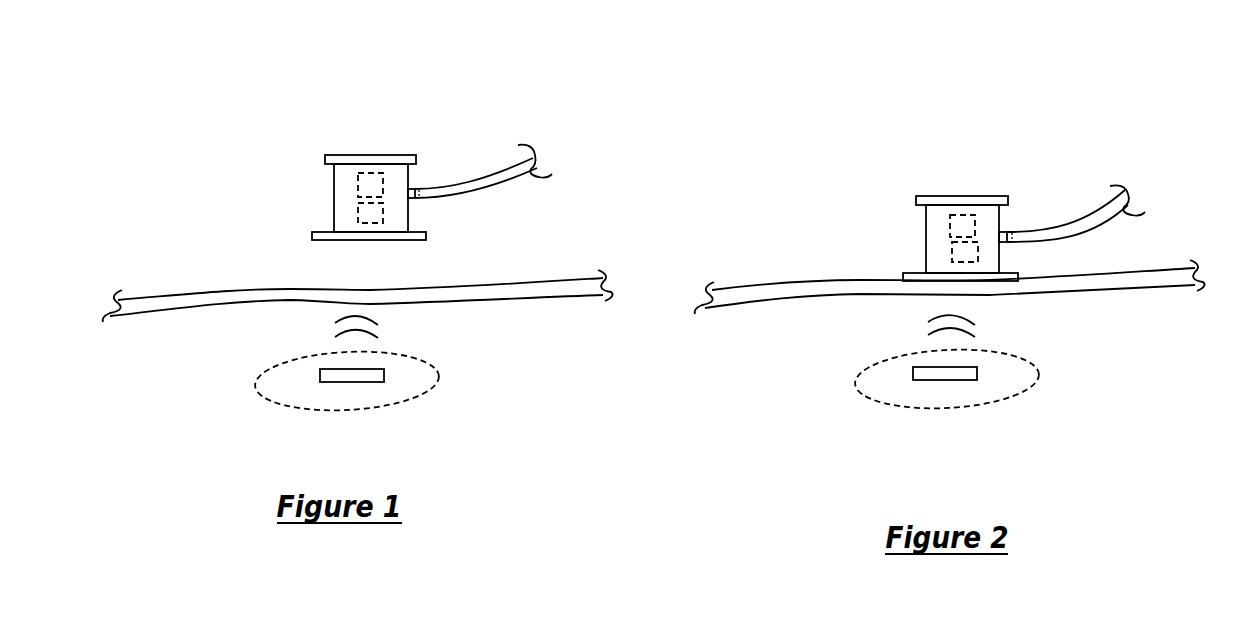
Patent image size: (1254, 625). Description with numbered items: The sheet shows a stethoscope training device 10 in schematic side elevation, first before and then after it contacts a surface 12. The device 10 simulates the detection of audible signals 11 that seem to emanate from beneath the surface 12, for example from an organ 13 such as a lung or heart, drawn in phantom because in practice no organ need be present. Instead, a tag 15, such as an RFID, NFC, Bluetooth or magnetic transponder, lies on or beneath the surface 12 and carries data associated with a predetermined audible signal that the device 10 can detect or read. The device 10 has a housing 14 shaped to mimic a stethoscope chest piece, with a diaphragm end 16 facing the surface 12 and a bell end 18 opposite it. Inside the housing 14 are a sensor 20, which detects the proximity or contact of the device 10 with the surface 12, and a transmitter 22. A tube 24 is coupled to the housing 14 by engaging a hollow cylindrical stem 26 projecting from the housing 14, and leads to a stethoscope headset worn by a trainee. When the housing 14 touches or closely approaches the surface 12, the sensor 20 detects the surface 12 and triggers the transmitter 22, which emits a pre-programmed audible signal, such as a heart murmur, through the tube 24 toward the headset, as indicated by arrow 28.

In FIG. 1, the stethoscope training device 10 is at (293, 104).
In FIG. 2, the stethoscope training device 10 is at (915, 136).
In FIG. 1, the audible signals 11 is at (316, 335).
In FIG. 2, the audible signals 11 is at (913, 333).
In FIG. 1, the surface 12 is at (235, 292).
In FIG. 2, the surface 12 is at (805, 282).
In FIG. 1, the organ 13 is at (435, 404).
In FIG. 2, the organ 13 is at (1007, 403).
In FIG. 1, the housing 14 is at (415, 152).
In FIG. 2, the housing 14 is at (980, 200).
In FIG. 1, the tag 15 is at (320, 378).
In FIG. 2, the tag 15 is at (913, 378).
In FIG. 1, the diaphragm end 16 is at (390, 250).
In FIG. 1, the bell end 18 is at (357, 138).
In FIG. 1, the sensor 20 is at (358, 180).
In FIG. 2, the sensor 20 is at (950, 225).
In FIG. 1, the transmitter 22 is at (358, 213).
In FIG. 2, the transmitter 22 is at (945, 256).
In FIG. 1, the tube 24 is at (518, 177).
In FIG. 2, the tube 24 is at (1105, 222).
In FIG. 1, the stem 26 is at (413, 190).
In FIG. 2, the arrow 28 is at (1147, 187).